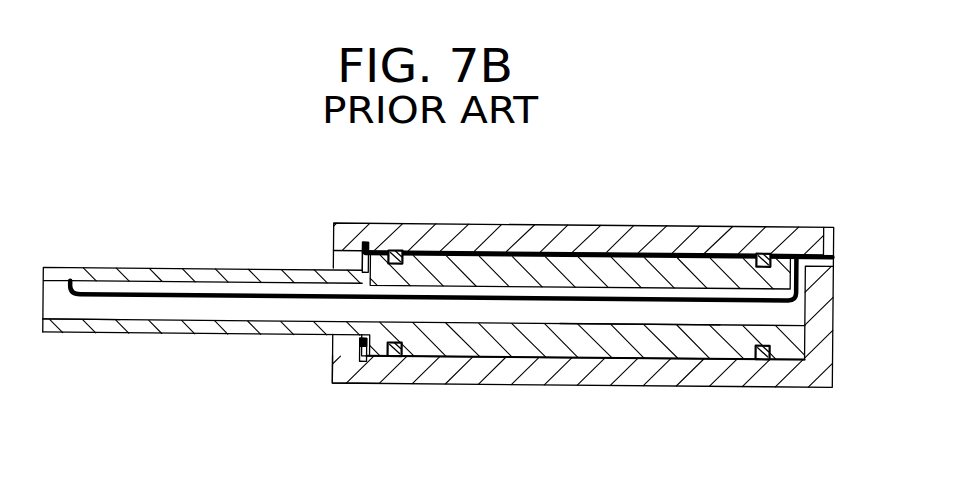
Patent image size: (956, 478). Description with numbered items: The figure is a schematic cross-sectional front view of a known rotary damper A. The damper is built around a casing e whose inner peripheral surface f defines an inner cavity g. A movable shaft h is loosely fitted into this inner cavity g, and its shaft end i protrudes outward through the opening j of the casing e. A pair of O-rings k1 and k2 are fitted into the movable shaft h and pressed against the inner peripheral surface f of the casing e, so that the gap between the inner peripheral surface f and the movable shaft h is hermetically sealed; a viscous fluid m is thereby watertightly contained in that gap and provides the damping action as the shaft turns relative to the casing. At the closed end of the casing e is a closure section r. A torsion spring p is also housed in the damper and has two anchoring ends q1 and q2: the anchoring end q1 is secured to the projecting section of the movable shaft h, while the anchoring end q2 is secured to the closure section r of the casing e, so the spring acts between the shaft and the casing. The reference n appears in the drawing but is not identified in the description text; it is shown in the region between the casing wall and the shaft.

The rotary damper A is at (607, 218).
The casing e is at (710, 231).
The closure section r is at (823, 304).
The anchoring end q1 is at (75, 280).
The anchoring end q2 is at (820, 226).
The inner cylinder n is at (463, 314).
The torsion spring p is at (217, 290).
The viscous fluid m is at (546, 361).
The movable shaft h is at (640, 345).
The shaft end i is at (110, 339).
The opening j is at (331, 377).
The inner cavity g is at (340, 263).
The inner peripheral surface f is at (345, 351).
The O-ring k1 is at (398, 250).
The O-ring k2 is at (760, 357).